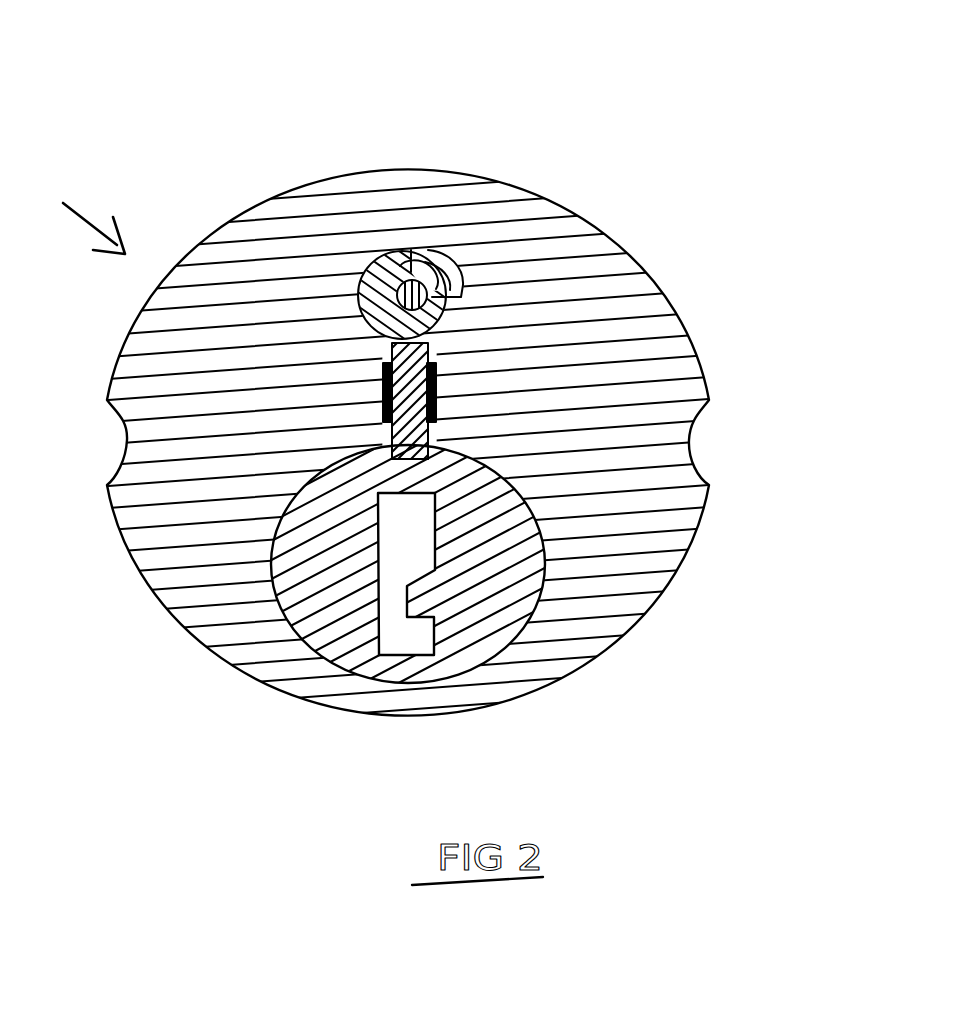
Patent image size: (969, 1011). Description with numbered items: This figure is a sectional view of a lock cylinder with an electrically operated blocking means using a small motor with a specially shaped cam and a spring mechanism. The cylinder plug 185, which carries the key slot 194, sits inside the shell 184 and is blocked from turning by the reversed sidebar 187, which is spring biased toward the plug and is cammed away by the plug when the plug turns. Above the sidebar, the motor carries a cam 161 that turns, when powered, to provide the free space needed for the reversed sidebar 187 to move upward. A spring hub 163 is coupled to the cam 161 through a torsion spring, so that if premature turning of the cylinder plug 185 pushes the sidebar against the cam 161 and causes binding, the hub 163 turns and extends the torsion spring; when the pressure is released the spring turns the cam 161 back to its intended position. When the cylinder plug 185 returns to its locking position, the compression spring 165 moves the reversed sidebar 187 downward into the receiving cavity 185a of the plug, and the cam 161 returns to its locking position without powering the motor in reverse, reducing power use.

The cam 161 is at (381, 255).
The spring hub 163 is at (437, 270).
The compression spring 165 is at (433, 433).
The reversed sidebar 187 is at (437, 444).
The receiving cavity 185a is at (437, 448).
The shell 184 is at (590, 572).
The cylinder plug 185 is at (312, 592).
The key slot 194 is at (398, 636).